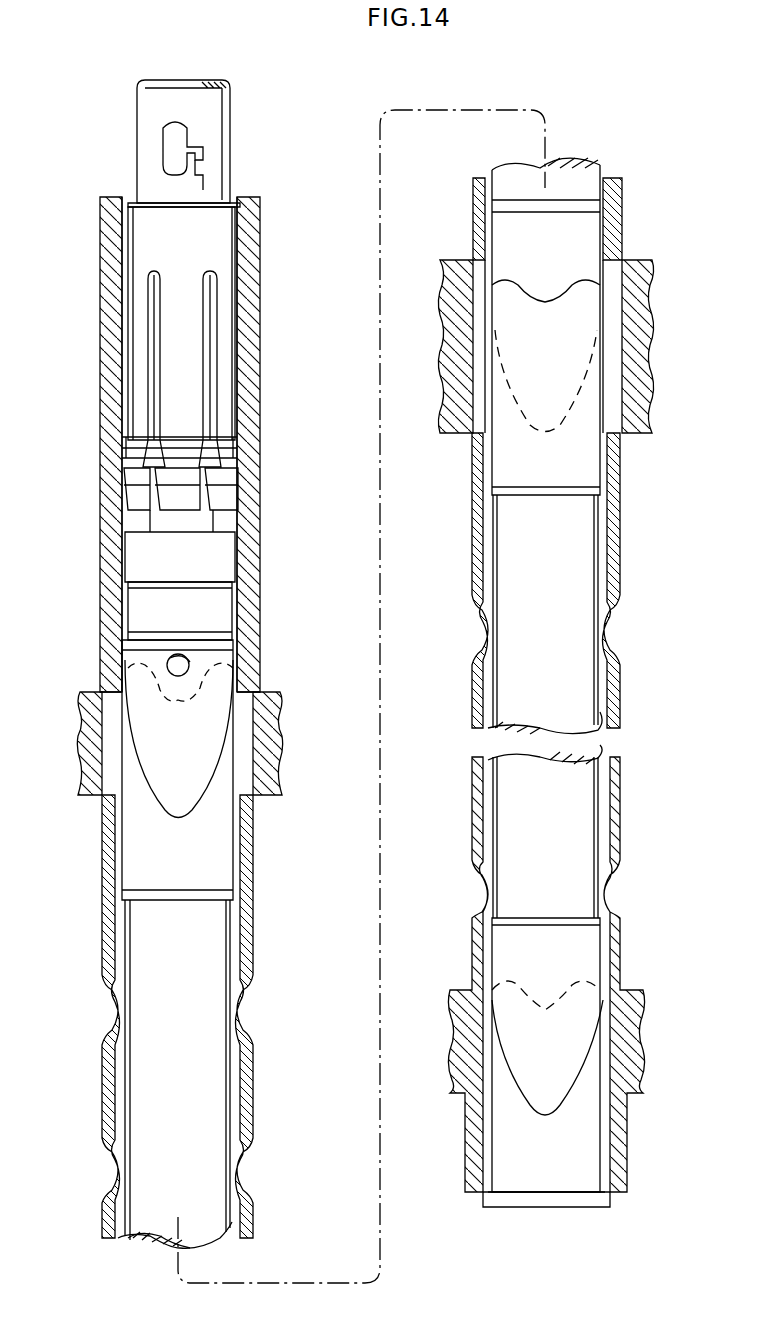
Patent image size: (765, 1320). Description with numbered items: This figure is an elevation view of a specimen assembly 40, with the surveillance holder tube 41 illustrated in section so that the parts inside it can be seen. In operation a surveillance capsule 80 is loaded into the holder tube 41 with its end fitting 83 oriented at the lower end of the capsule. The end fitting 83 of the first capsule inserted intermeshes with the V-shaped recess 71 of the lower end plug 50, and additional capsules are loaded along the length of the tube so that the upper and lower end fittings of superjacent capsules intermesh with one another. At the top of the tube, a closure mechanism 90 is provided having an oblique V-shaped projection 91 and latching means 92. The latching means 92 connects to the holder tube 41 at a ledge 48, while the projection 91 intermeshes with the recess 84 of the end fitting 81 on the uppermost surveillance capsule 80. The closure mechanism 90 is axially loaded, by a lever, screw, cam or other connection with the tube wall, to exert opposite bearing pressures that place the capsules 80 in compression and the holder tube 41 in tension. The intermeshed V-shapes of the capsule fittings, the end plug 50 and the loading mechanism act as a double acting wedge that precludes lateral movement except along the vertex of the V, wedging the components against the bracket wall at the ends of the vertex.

The connector housing assembly 40 is at (98, 598).
The surveillance holder tube 41 is at (615, 512).
The ledge 48 is at (238, 452).
The lower end plug 50 is at (585, 1145).
The V-shaped recess 71 is at (588, 1063).
The surveillance capsule 80 is at (160, 990).
The end fitting 81 is at (208, 829).
The end fitting 83 is at (578, 258).
The recess 84 is at (215, 780).
The closure mechanism 90 is at (218, 243).
The oblique V-shaped projection 91 is at (215, 692).
The latching means 92 is at (230, 482).